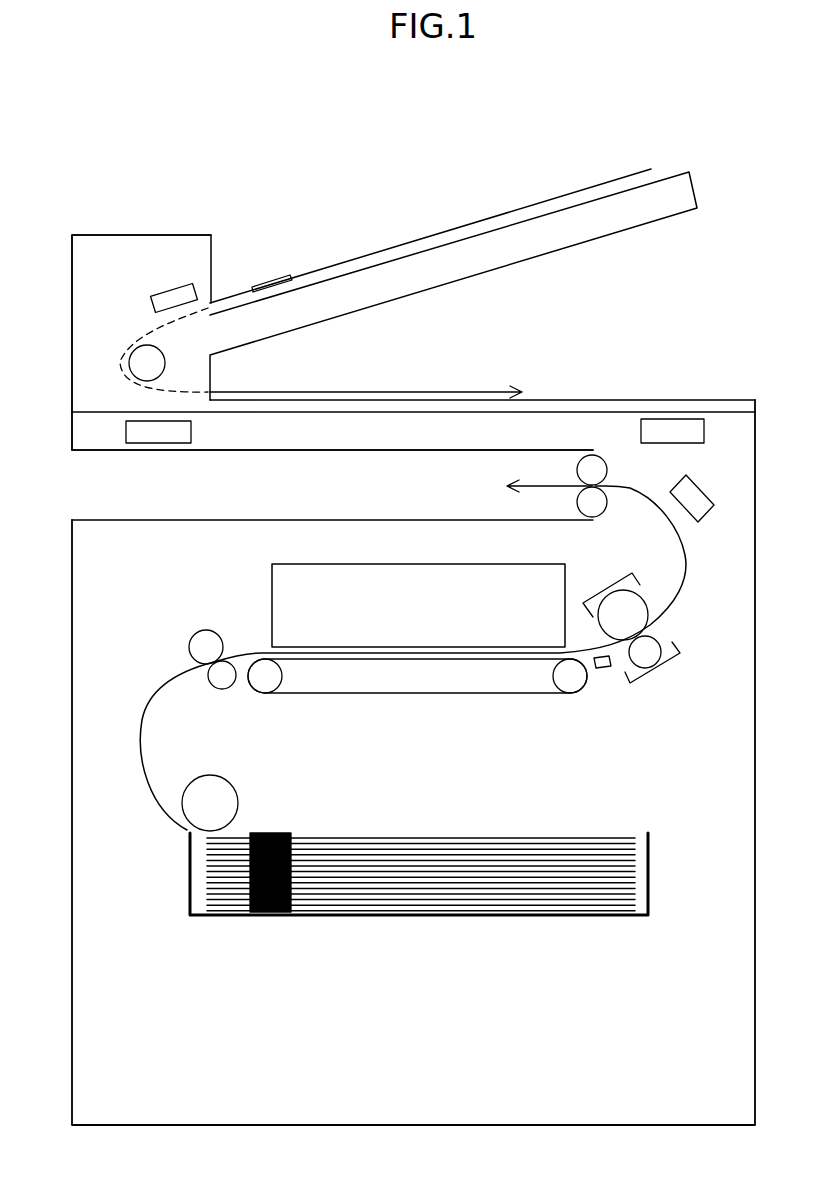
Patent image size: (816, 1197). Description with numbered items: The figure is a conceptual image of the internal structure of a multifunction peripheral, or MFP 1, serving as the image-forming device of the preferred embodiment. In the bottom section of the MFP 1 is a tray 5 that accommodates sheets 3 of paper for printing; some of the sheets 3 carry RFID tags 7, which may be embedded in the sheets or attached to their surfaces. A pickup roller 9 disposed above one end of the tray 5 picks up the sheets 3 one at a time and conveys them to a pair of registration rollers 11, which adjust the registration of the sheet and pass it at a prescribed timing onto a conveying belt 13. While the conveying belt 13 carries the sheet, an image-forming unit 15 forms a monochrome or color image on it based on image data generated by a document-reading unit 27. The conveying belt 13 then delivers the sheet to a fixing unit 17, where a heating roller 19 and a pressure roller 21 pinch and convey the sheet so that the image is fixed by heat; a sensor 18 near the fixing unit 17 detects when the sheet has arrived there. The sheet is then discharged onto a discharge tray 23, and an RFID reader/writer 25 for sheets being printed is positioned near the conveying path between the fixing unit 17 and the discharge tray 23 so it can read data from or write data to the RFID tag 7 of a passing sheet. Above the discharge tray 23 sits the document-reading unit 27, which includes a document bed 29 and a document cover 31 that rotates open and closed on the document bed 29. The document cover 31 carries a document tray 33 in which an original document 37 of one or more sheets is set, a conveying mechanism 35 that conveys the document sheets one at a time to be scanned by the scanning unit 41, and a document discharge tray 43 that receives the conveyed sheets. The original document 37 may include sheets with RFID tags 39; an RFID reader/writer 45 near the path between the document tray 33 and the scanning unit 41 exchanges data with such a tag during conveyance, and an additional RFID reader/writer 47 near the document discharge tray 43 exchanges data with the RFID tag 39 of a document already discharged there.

The multifunction peripheral 1 is at (378, 183).
The sheets 3 is at (435, 833).
The tray 5 is at (648, 870).
The RFID tags 7 is at (273, 832).
The pickup roller 9 is at (208, 788).
The registration rollers 11 is at (217, 677).
The conveying belt 13 is at (433, 682).
The image-forming unit 15 is at (430, 578).
The fixing unit 17 is at (626, 708).
The sensor 18 is at (602, 668).
The heating roller 19 is at (630, 613).
The pressure roller 21 is at (650, 648).
The discharge tray 23 is at (348, 518).
The RFID reader/writer 25 is at (693, 498).
The document-reading unit 27 is at (190, 200).
The document bed 29 is at (603, 411).
The document cover 31 is at (98, 268).
The document tray 33 is at (662, 177).
The conveying mechanism 35 is at (143, 362).
The original document 37 is at (483, 218).
The RFID tags 39 is at (263, 282).
The scanning unit 41 is at (156, 433).
The document discharge tray 43 is at (555, 399).
The RFID reader/writer 45 is at (172, 296).
The RFID reader/writer 47 is at (677, 435).